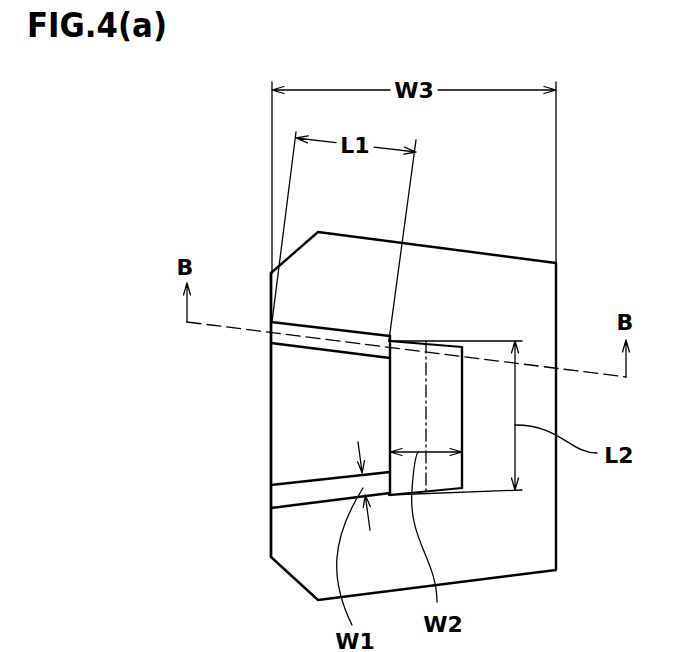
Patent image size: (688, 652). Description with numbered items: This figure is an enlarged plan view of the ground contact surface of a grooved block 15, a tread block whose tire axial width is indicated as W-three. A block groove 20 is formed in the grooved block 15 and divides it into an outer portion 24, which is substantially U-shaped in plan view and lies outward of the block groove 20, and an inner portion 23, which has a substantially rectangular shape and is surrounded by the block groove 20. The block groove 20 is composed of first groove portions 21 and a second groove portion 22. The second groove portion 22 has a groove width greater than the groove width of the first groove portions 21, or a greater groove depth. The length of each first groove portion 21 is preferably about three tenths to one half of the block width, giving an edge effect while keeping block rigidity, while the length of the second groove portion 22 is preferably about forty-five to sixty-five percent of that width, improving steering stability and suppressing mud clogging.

The grooved block 15 is at (537, 188).
The block groove 20 is at (150, 432).
The first groove portion 21 is at (318, 345).
The second groove portion 22 is at (407, 410).
The inner portion 23 is at (356, 393).
The outer portion 24 is at (492, 307).